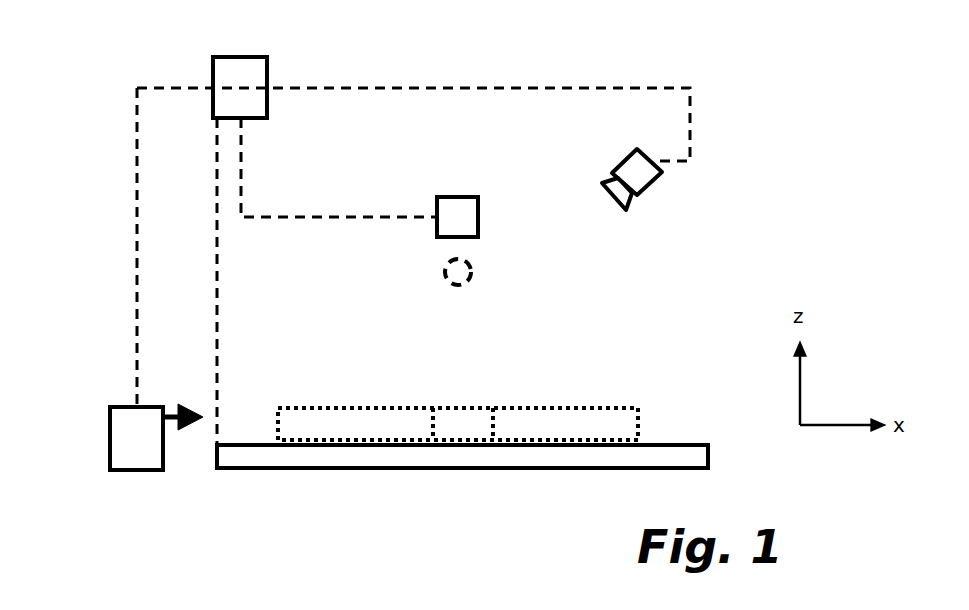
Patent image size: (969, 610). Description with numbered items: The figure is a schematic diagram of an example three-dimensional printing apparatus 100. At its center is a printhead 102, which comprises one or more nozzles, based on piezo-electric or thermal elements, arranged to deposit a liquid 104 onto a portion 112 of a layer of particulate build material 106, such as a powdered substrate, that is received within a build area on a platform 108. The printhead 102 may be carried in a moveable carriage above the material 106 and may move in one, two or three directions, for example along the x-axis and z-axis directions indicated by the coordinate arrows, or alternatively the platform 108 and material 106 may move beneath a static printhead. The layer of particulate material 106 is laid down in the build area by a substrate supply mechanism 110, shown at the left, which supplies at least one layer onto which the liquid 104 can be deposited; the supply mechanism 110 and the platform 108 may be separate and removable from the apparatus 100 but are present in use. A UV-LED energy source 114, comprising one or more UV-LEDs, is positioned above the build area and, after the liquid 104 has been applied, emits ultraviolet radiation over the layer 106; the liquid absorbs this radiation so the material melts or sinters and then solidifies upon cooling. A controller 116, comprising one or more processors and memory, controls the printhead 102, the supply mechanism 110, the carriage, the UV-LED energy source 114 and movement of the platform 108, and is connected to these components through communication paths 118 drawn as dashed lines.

The three-dimensional printing apparatus 100 is at (775, 63).
The printhead 102 is at (465, 197).
The liquid 104 is at (471, 268).
The layer of particulate build material 106 is at (607, 408).
The platform 108 is at (272, 470).
The substrate supply mechanism 110 is at (110, 430).
The portion of the layer of particulate material 112 is at (467, 420).
The UV-LED energy source 114 is at (650, 185).
The controller 116 is at (237, 57).
The communication paths 118 is at (423, 88).